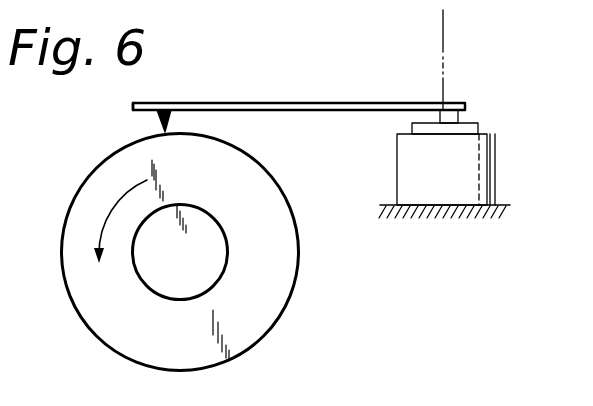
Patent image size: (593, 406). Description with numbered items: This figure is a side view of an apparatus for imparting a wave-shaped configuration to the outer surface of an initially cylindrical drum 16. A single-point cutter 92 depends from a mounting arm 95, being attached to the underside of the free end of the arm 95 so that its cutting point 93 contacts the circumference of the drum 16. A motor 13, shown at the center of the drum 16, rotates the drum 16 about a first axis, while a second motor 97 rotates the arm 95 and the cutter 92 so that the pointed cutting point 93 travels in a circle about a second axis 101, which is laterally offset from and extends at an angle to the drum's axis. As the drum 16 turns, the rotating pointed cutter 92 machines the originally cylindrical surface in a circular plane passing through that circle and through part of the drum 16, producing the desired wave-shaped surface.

The drum 16 is at (82, 323).
The motor 13 is at (212, 274).
The mounting arm 95 is at (330, 68).
The single-point cutter 92 is at (160, 112).
The cutting point 93 is at (165, 132).
The motor 97 is at (487, 128).
The second axis 101 is at (447, 73).